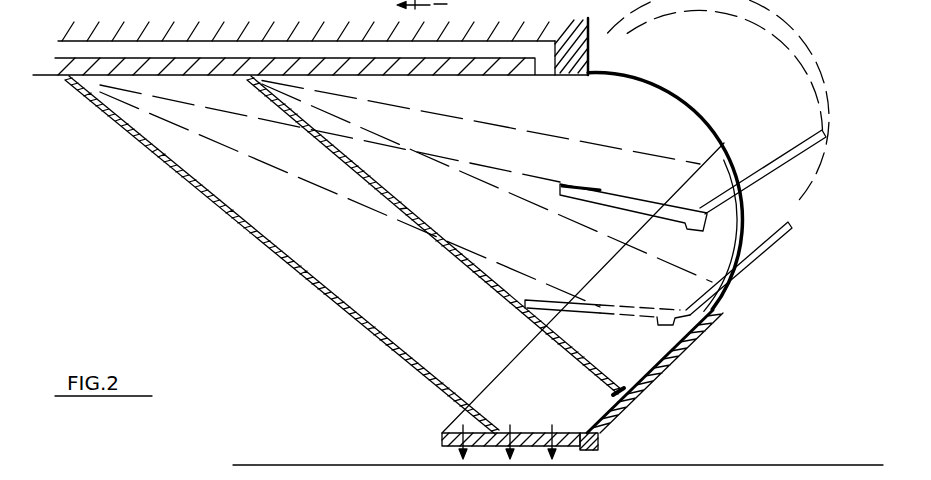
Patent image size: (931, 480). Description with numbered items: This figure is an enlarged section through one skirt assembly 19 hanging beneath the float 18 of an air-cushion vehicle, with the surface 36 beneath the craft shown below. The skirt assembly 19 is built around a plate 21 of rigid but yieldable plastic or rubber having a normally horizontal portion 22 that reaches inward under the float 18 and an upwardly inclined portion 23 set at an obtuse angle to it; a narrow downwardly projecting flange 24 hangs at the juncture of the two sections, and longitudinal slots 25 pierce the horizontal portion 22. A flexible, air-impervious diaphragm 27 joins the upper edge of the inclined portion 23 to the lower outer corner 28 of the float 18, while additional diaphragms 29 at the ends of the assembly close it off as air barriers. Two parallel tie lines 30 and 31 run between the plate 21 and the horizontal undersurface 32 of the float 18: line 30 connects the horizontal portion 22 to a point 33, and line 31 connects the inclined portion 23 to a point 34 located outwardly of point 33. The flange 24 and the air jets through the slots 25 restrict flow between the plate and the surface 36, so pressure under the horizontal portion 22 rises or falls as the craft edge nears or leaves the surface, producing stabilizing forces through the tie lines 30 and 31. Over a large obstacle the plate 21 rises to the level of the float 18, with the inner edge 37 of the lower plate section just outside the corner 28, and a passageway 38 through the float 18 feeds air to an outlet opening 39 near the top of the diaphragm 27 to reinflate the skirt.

The float 18 is at (580, 40).
The skirt assembly 19 is at (752, 286).
The plate 21 is at (784, 240).
The horizontal portion 22 is at (580, 313).
The inclined portion 23 is at (750, 262).
The flange 24 is at (605, 446).
The slots 25 is at (552, 430).
The diaphragm 27 is at (665, 90).
The lower outer corner 28 is at (588, 76).
The additional diaphragms 29 is at (612, 263).
The cable 30 is at (253, 230).
The cable 31 is at (399, 199).
The horizontal undersurface 32 is at (417, 77).
The point 33 is at (65, 82).
The point 34 is at (248, 80).
The surface 36 is at (818, 463).
The inner edge 37 is at (442, 435).
The passageway 38 is at (80, 50).
The outlet opening 39 is at (541, 70).